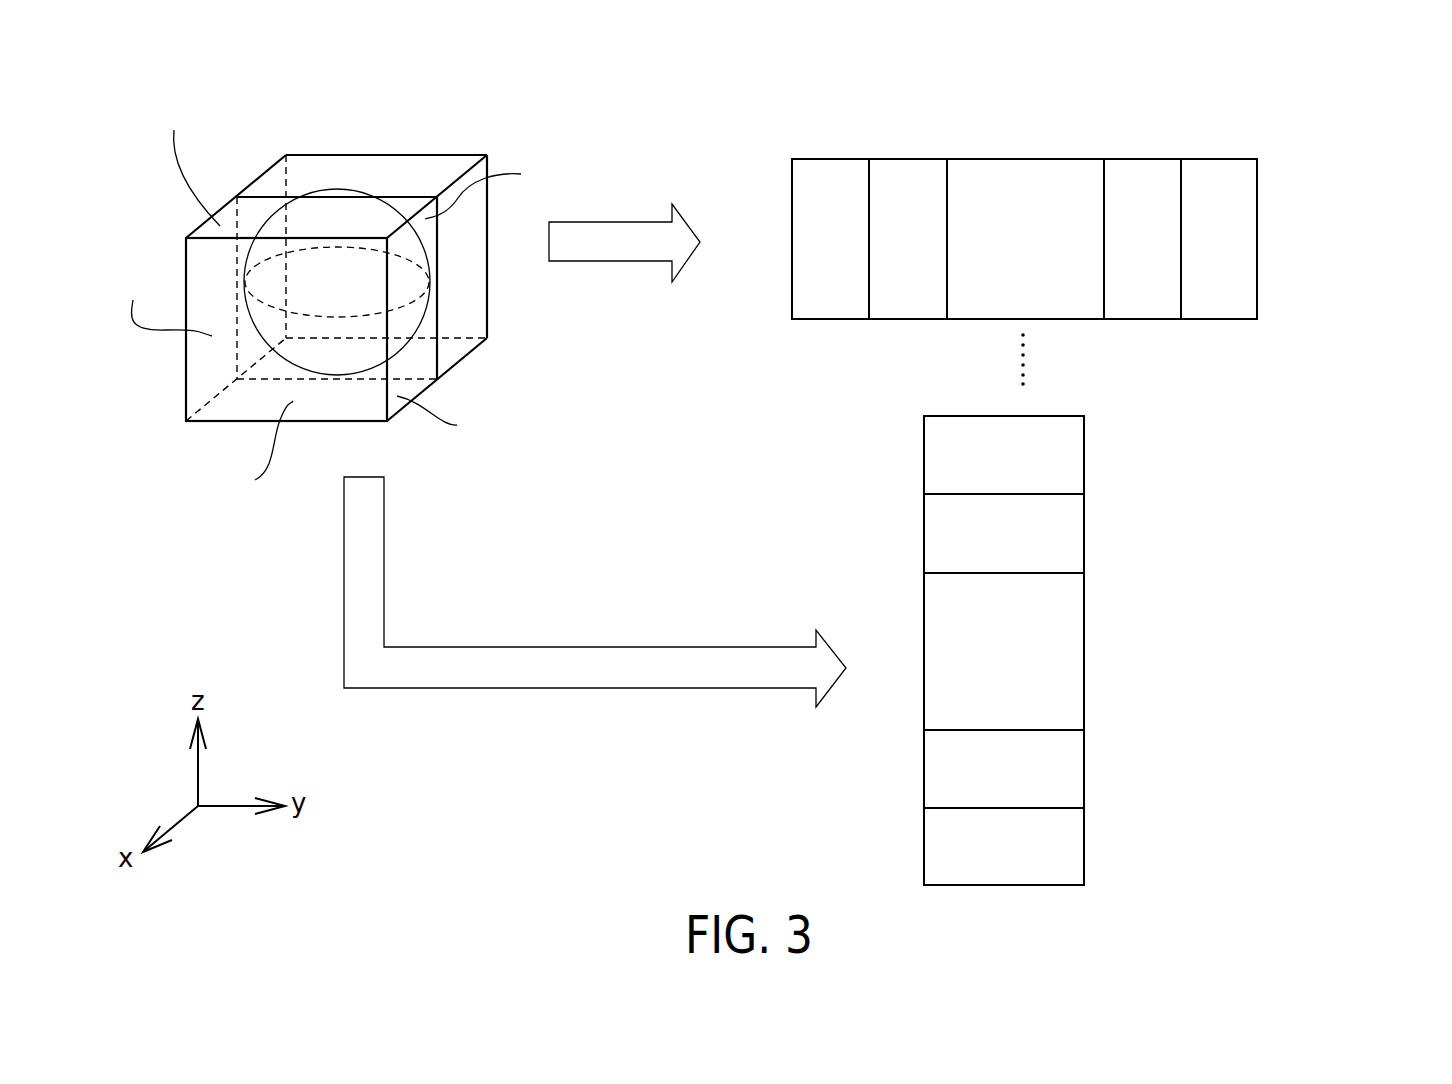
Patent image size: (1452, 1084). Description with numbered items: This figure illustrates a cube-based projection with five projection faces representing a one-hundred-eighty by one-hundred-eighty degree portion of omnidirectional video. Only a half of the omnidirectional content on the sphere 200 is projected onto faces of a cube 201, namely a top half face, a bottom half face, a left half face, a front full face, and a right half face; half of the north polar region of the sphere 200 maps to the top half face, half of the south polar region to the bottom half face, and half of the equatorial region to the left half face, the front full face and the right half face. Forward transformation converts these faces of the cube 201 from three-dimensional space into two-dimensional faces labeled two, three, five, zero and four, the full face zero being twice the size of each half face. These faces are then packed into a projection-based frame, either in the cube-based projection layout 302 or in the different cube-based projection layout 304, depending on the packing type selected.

The sphere 200 is at (338, 188).
The cube 201 is at (388, 422).
The cube-based projection layout 302 is at (1306, 120).
The cube-based projection layout 304 is at (1224, 582).